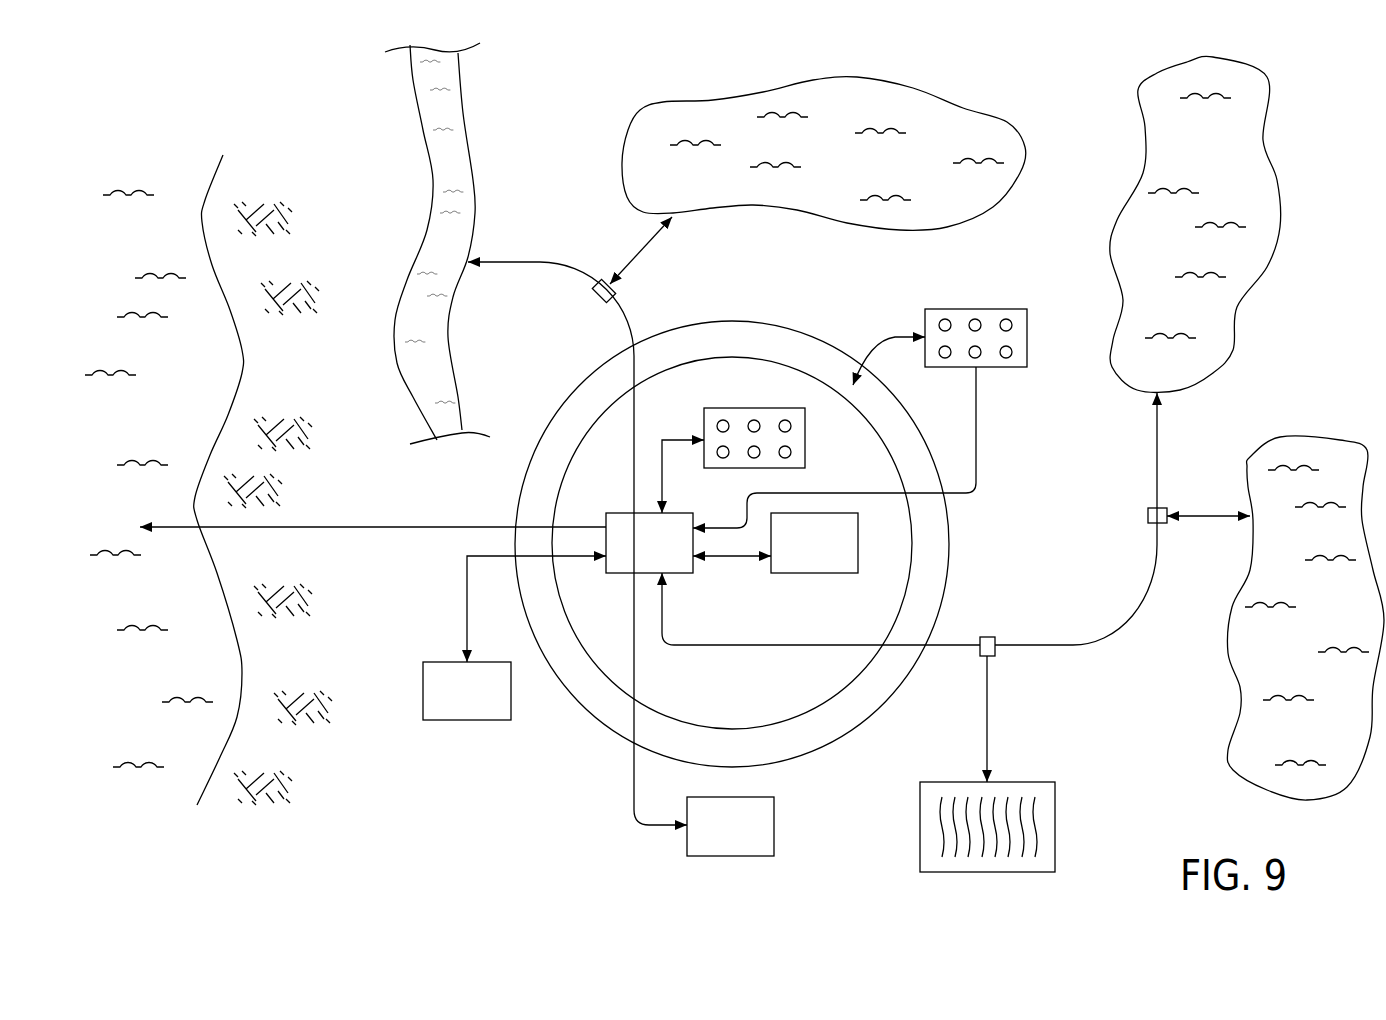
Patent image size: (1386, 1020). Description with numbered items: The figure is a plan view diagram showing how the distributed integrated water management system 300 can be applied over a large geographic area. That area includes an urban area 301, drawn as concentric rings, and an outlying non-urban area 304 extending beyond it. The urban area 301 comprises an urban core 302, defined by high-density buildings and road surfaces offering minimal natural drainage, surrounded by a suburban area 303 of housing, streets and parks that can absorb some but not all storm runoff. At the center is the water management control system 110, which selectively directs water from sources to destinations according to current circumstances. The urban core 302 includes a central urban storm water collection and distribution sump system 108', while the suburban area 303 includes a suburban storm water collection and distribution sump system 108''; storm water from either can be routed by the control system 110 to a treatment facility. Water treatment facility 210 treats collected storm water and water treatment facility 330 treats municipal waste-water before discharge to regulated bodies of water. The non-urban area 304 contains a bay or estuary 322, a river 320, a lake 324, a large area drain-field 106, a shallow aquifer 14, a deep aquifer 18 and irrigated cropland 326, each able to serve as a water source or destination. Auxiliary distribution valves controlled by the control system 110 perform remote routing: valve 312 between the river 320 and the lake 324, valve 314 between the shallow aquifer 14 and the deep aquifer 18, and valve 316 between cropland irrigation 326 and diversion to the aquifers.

The water management system 300 is at (1018, 62).
The bay or estuary 322 is at (122, 162).
The outlying non-urban area 304 is at (1346, 370).
The river 320 is at (462, 113).
The lake 324 is at (723, 98).
The auxiliary distribution valve 312 is at (592, 298).
The urban area 301 is at (787, 323).
The urban core 302 is at (780, 683).
The suburban area 303 is at (587, 682).
The water management control system 110 is at (668, 554).
The water treatment facility 210 is at (833, 554).
The water treatment facility 330 is at (486, 702).
The large area drain-field 106 is at (749, 837).
The central urban storm water collection and distribution sump system 108' is at (739, 422).
The suburban storm water collection and distribution sump system 108'' is at (1004, 315).
The auxiliary distribution valve 316 is at (987, 637).
The auxiliary distribution valve 314 is at (1148, 516).
The irrigated cropland 326 is at (1055, 805).
The shallow aquifer 14 is at (1273, 168).
The deep aquifer 18 is at (1230, 680).